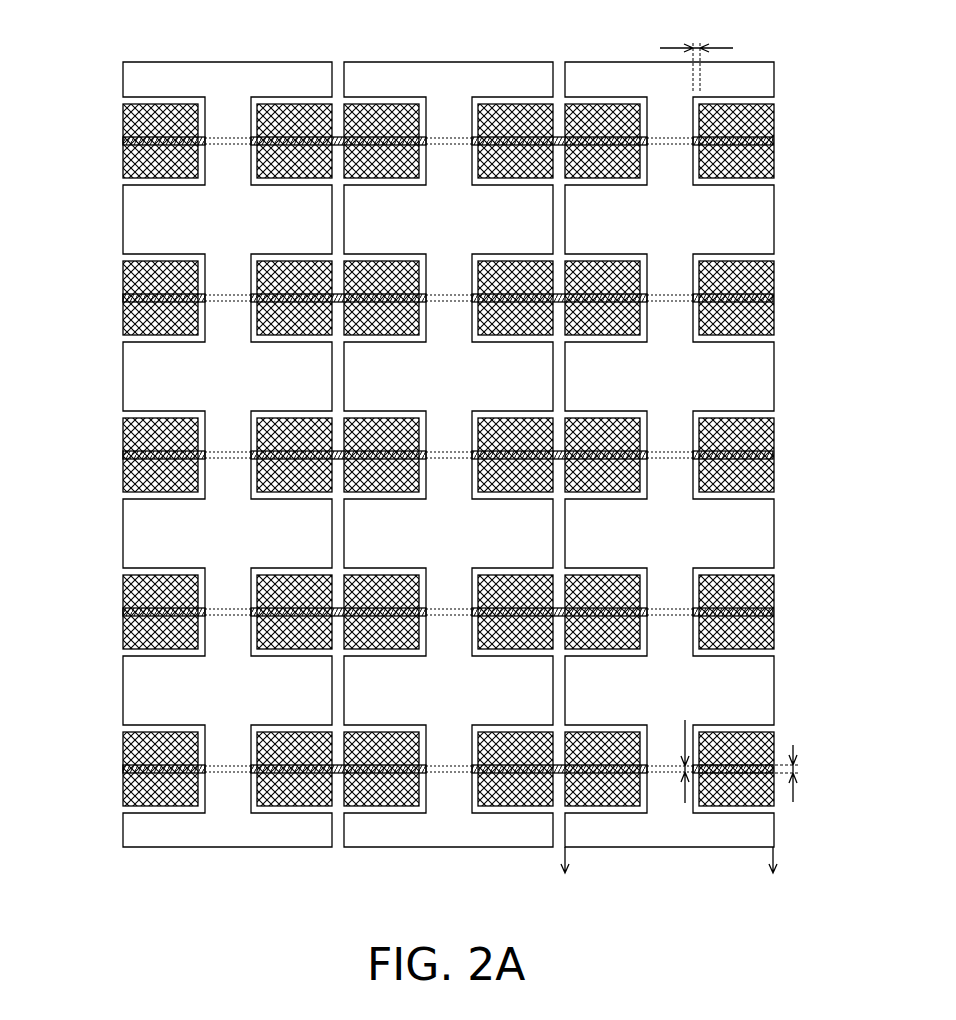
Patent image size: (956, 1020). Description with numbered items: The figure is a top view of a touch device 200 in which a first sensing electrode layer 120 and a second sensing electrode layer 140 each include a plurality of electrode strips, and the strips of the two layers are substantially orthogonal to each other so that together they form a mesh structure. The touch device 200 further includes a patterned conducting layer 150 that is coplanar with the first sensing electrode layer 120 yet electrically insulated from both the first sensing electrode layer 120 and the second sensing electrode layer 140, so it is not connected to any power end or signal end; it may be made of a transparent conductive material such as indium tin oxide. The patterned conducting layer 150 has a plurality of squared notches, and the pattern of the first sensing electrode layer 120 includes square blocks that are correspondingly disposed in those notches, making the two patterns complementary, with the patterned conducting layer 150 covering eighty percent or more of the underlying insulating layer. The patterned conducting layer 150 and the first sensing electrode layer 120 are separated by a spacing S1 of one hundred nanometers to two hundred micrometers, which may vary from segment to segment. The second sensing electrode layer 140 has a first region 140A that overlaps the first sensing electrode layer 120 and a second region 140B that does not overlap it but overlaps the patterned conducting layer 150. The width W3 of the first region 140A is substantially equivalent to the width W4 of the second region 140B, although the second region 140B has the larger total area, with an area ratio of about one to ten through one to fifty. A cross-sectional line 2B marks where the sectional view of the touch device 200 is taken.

The touch device 200 is at (81, 39).
The first sensing electrode layer 120 is at (765, 80).
The patterned conducting layer 150 is at (772, 112).
The second sensing electrode layer 140 is at (481, 544).
The first region 140A is at (670, 777).
The second region 140B is at (739, 777).
The spacing S1 is at (696, 54).
The width of the first region W3 is at (670, 761).
The width of the second region W4 is at (768, 773).
The cross-sectional line 2B-2B' 2B is at (672, 874).